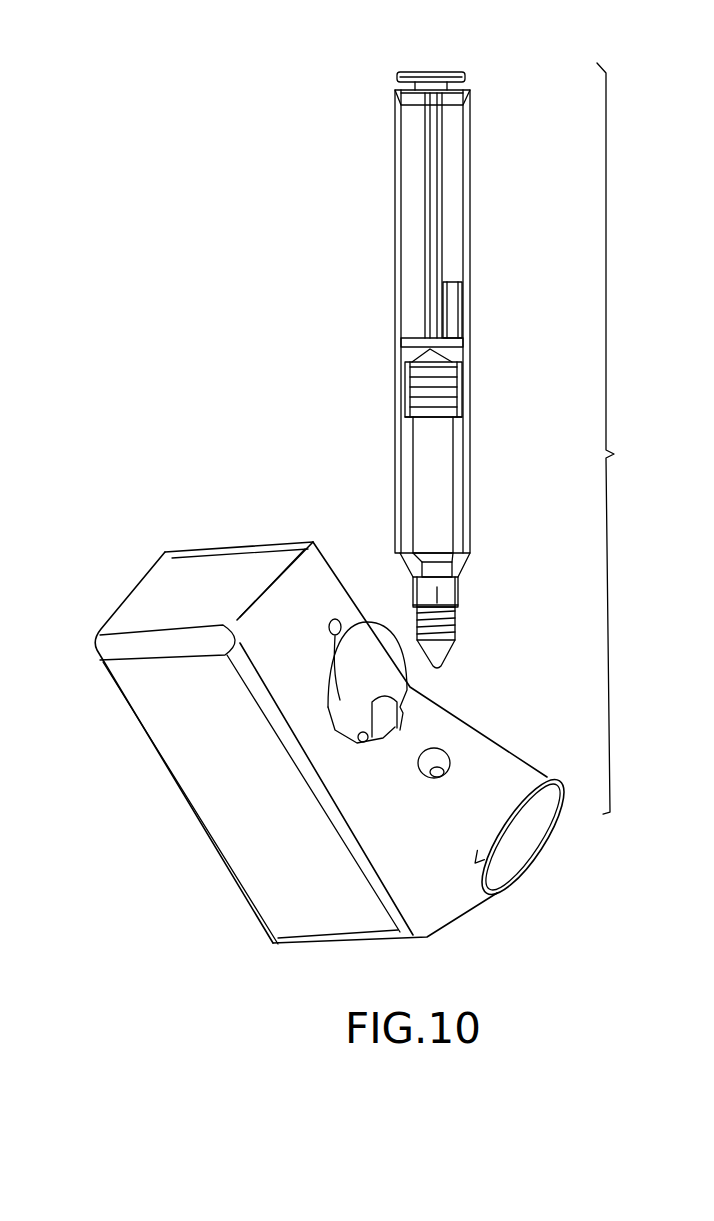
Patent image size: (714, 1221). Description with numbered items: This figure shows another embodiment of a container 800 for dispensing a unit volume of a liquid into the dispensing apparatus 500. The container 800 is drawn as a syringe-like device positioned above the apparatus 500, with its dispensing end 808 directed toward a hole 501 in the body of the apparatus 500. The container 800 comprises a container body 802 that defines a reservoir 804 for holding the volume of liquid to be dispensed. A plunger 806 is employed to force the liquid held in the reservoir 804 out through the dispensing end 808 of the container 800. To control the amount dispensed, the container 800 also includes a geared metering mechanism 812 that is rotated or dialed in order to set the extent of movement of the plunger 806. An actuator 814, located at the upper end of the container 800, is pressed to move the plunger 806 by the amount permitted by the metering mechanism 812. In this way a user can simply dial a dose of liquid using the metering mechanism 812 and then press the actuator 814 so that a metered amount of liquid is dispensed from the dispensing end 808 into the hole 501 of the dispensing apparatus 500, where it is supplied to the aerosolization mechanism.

The dispensing apparatus 500 is at (118, 568).
The hole 501 is at (447, 770).
The container 800 is at (504, 420).
The container body 802 is at (465, 353).
The reservoir 804 is at (445, 478).
The plunger 806 is at (458, 403).
The dispensing end 808 is at (439, 670).
The geared metering mechanism 812 is at (455, 193).
The actuator 814 is at (430, 72).